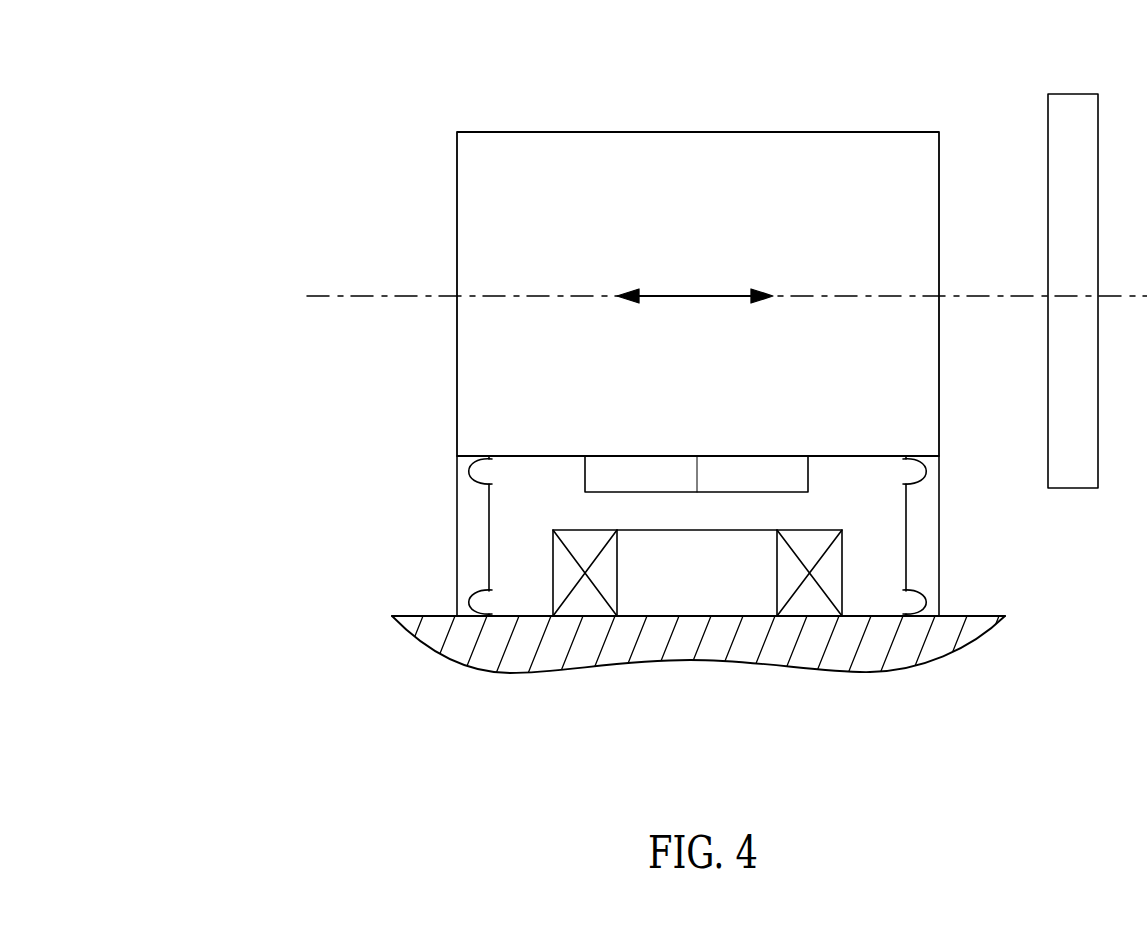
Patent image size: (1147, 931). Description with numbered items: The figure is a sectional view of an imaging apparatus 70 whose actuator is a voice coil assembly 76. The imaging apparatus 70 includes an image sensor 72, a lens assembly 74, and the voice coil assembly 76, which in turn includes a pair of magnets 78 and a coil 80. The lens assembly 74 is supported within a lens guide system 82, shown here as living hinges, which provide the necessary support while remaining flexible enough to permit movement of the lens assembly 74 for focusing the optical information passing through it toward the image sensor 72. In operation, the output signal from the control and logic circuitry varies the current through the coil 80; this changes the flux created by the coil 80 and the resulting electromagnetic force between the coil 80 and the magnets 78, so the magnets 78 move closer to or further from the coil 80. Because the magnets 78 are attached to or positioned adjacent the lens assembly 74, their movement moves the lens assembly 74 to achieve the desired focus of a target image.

The imaging apparatus 70 is at (267, 111).
The image sensor 72 is at (1082, 93).
The lens assembly 74 is at (813, 158).
The voice coil assembly 76 is at (872, 548).
The magnets 78 is at (731, 468).
The coil 80 is at (800, 603).
The lens guide system 82 is at (925, 509).